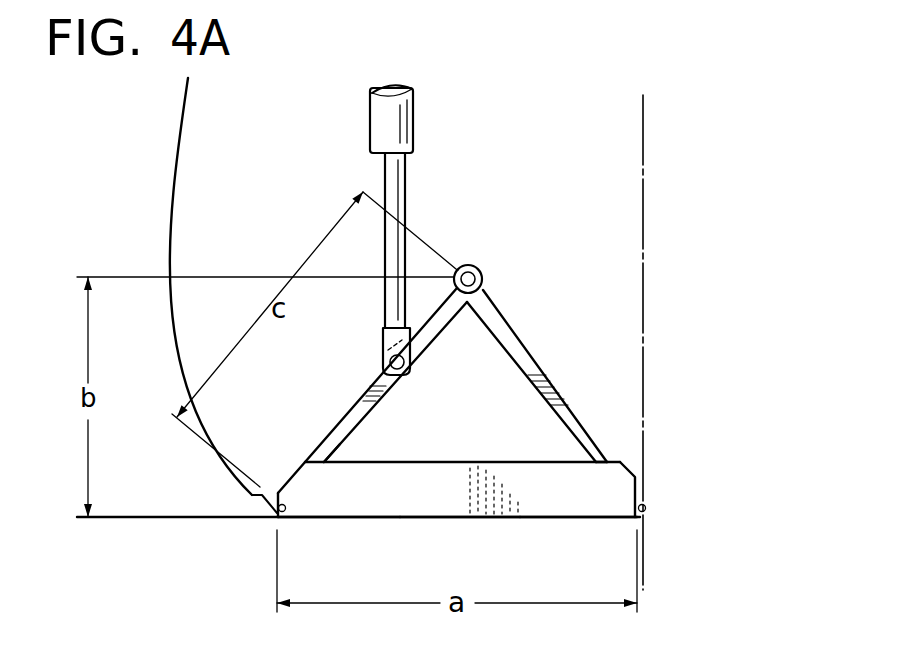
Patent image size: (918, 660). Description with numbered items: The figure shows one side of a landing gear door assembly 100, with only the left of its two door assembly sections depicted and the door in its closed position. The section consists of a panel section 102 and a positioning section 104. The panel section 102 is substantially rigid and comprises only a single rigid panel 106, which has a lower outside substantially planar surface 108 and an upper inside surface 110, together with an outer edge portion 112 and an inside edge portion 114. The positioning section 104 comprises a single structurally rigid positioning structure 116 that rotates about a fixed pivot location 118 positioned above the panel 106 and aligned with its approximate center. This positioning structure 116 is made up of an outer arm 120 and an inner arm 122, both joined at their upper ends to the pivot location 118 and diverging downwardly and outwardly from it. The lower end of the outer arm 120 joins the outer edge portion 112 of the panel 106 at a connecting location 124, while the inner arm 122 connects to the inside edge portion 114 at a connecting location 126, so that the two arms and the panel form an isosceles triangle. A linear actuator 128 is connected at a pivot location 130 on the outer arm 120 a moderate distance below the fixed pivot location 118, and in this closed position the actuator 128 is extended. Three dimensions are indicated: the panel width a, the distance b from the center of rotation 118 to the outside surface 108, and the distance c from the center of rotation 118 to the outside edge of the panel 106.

The door assembly 100 is at (664, 259).
The panel section 102 is at (450, 497).
The positioning section 104 is at (436, 222).
The rigid panel 106 is at (386, 497).
The lower outside substantially planar surface 108 is at (538, 497).
The upper inside surface 110 is at (528, 462).
The outer edge portion 112 is at (297, 495).
The inside edge portion 114 is at (623, 493).
The structurally rigid positioning structure 116 is at (529, 315).
The fixed pivot location 118 is at (478, 271).
The outer arm 120 is at (360, 410).
The inner arm 122 is at (550, 372).
The connecting location 124 is at (320, 458).
The connecting location 126 is at (602, 458).
The linear actuator 128 is at (395, 120).
The pivot location 130 is at (383, 363).